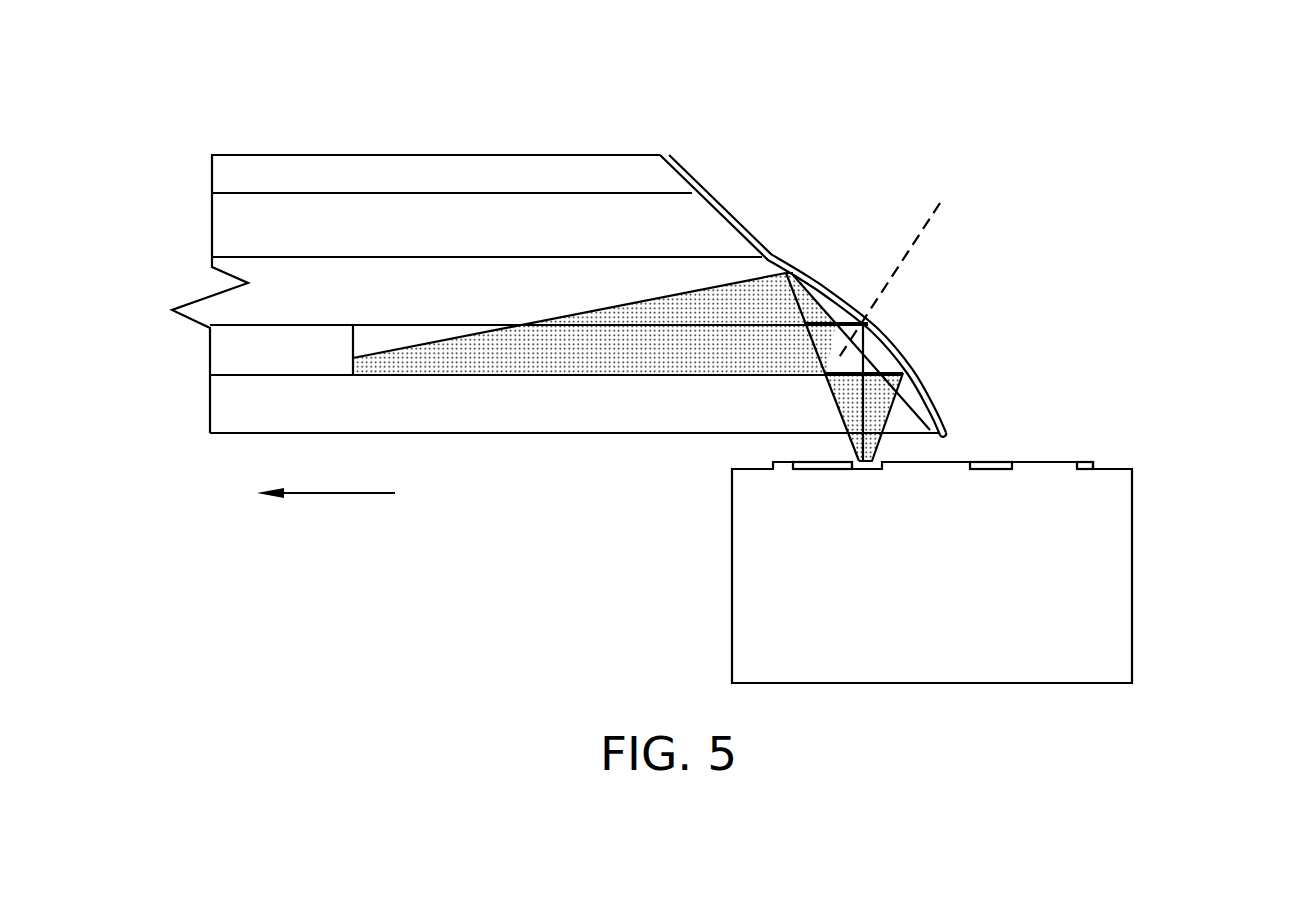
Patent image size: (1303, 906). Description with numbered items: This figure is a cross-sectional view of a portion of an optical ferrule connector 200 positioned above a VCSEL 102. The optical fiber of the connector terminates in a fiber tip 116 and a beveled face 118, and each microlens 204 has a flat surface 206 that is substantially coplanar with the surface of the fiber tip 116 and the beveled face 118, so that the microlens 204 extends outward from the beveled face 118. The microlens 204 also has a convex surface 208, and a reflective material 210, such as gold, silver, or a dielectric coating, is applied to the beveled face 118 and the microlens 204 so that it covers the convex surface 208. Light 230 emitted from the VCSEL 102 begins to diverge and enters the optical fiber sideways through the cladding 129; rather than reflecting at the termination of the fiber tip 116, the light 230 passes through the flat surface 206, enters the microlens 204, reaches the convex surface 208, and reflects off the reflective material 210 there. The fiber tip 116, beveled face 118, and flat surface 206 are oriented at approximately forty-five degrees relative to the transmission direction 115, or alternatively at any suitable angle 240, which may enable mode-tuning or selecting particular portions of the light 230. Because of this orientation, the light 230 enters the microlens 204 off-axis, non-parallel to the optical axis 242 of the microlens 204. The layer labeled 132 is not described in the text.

The optical ferrule connector 200 is at (258, 106).
The beveled face 118 is at (692, 205).
The cladding 129 is at (255, 405).
The optical waveguide layer 132 is at (245, 345).
The reflective material 210 is at (740, 226).
The fiber tip 116 is at (913, 427).
The microlens 204 is at (827, 308).
The convex surface 208 is at (888, 352).
The flat surface 206 is at (903, 395).
The angle 240 is at (845, 418).
The light 230 is at (878, 445).
The optical axis 242 is at (900, 267).
The VCSEL 102 is at (1065, 583).
The transmission direction 115 is at (325, 493).